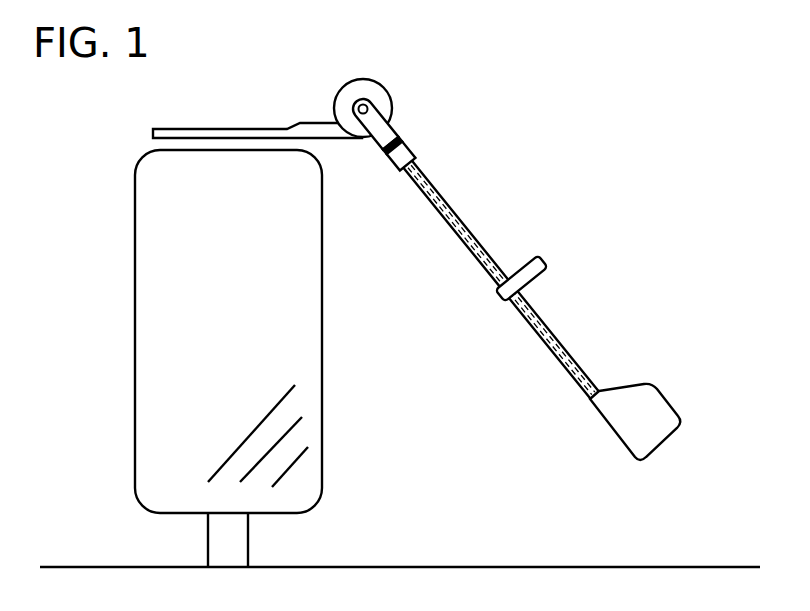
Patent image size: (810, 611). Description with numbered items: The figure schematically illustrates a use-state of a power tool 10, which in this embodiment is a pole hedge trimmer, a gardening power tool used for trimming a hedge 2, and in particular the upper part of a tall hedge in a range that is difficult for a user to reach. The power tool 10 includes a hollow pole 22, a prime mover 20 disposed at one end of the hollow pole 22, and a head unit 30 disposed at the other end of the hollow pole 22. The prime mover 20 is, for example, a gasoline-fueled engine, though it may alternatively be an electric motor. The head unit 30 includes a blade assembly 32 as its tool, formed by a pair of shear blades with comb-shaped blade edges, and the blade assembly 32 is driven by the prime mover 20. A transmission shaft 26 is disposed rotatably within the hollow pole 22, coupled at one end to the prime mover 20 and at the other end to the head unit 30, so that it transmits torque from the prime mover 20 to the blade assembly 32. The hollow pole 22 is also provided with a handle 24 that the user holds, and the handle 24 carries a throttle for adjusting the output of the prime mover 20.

The hedge 2 is at (135, 258).
The power tool 10 is at (535, 153).
The prime mover 20 is at (653, 410).
The hollow pole 22 is at (555, 333).
The handle 24 is at (548, 270).
The transmission shaft 26 is at (446, 221).
The head unit 30 is at (388, 133).
The blade assembly 32 is at (230, 128).